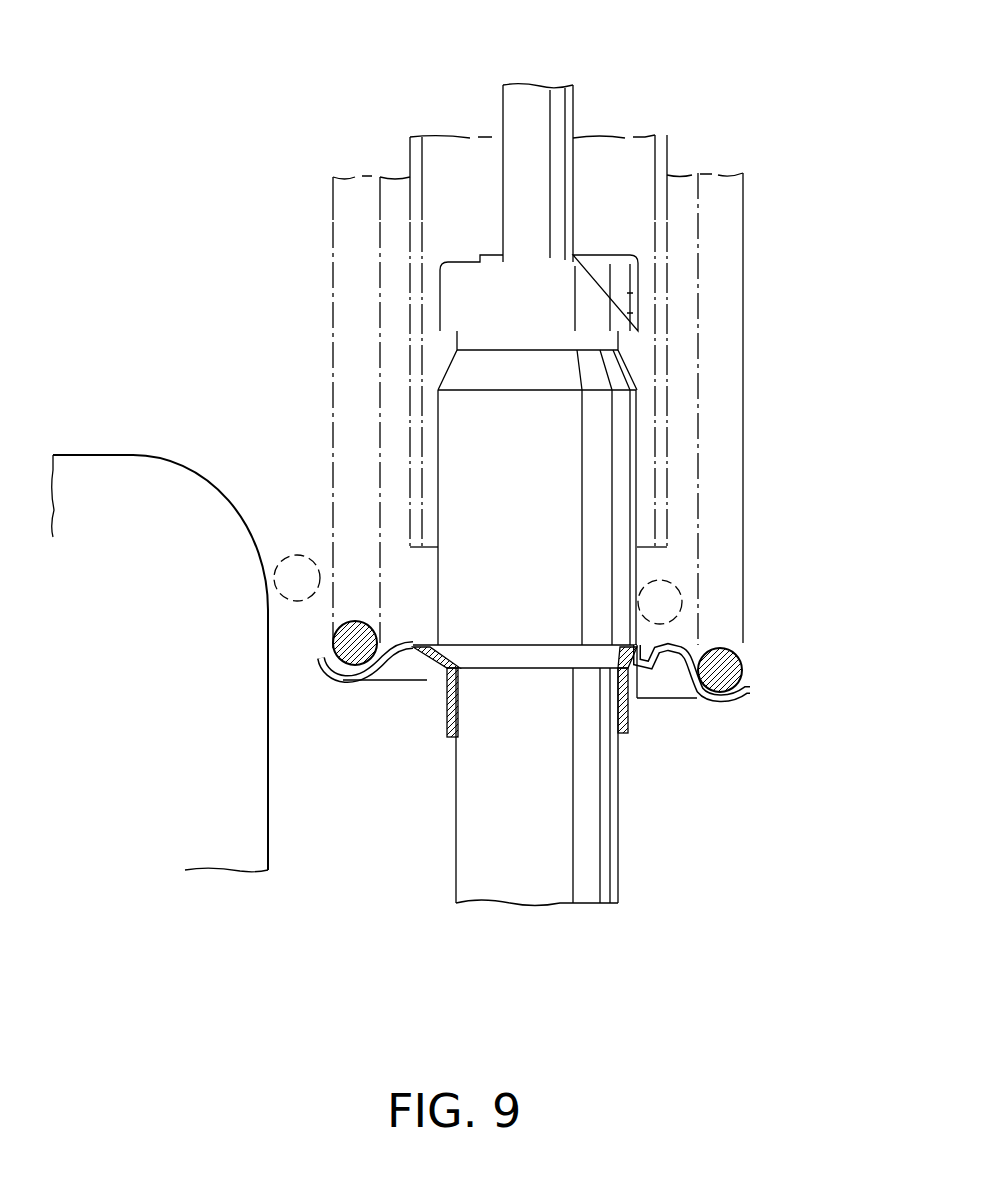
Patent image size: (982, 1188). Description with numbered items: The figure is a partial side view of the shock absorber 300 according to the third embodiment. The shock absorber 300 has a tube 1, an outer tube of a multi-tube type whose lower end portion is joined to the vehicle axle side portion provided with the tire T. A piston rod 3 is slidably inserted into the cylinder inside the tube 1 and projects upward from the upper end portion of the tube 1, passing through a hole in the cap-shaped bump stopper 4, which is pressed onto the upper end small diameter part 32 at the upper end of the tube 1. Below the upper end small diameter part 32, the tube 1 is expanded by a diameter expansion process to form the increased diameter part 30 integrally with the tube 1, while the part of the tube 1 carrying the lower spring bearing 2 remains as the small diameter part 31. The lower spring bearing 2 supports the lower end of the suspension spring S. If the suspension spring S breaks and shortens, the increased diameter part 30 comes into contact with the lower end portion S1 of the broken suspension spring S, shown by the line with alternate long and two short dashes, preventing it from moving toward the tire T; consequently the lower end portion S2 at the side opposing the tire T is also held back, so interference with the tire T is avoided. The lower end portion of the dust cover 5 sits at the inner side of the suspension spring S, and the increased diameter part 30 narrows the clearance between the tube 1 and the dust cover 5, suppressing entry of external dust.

The shock absorber 300 is at (606, 86).
The dust cover 5 is at (668, 155).
The piston rod 3 is at (503, 110).
The bump stopper 4 is at (458, 262).
The upper end small diameter part 32 is at (620, 342).
The increased diameter part 30 is at (637, 493).
The lower spring bearing 2 is at (427, 680).
The small diameter part 31 is at (620, 828).
The tube 1 is at (452, 839).
The suspension spring S is at (760, 654).
The lower end portion of the broken suspension spring S1 is at (680, 588).
The lower end portion of the broken suspension spring at the side opposing the tire S2 is at (303, 565).
The tire T is at (110, 453).